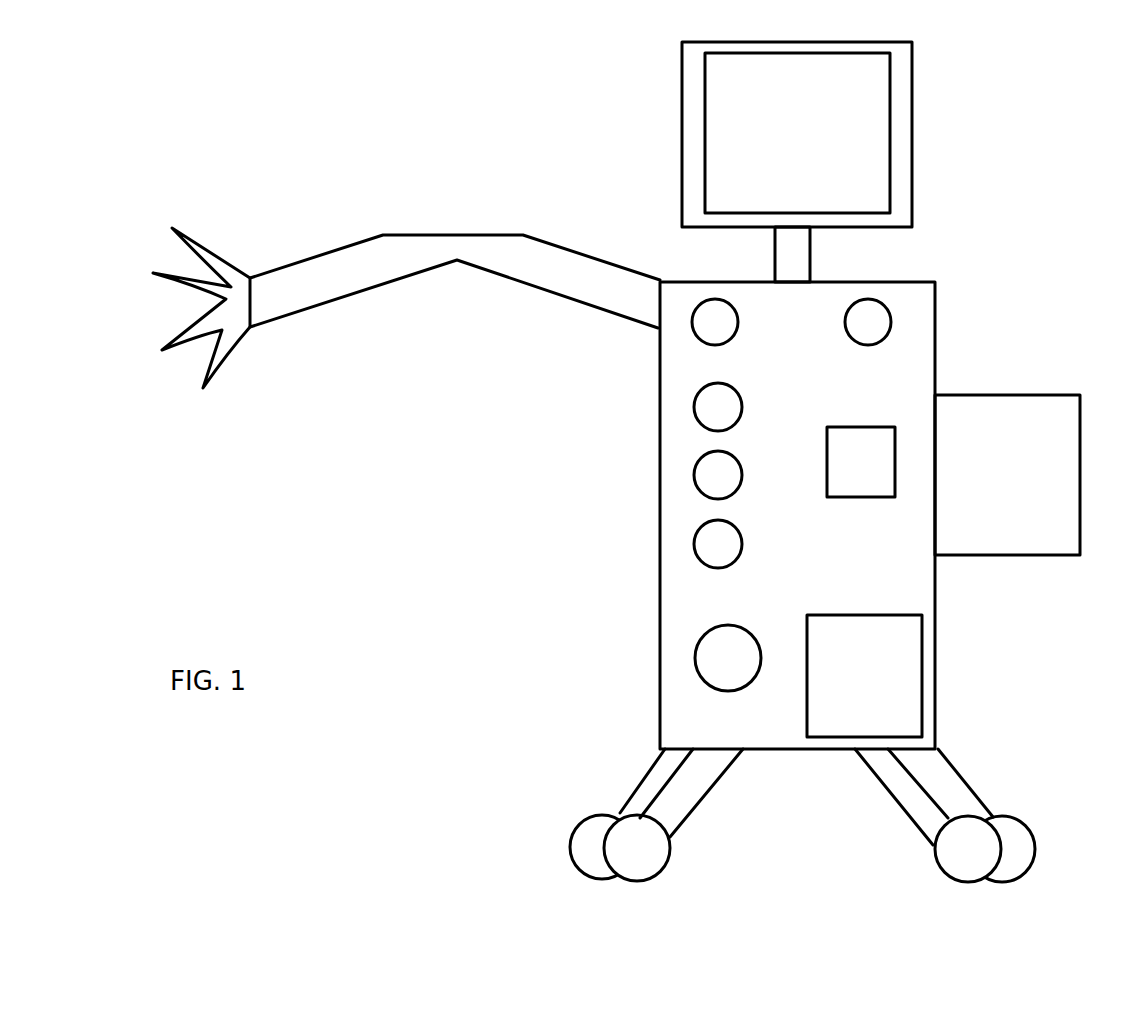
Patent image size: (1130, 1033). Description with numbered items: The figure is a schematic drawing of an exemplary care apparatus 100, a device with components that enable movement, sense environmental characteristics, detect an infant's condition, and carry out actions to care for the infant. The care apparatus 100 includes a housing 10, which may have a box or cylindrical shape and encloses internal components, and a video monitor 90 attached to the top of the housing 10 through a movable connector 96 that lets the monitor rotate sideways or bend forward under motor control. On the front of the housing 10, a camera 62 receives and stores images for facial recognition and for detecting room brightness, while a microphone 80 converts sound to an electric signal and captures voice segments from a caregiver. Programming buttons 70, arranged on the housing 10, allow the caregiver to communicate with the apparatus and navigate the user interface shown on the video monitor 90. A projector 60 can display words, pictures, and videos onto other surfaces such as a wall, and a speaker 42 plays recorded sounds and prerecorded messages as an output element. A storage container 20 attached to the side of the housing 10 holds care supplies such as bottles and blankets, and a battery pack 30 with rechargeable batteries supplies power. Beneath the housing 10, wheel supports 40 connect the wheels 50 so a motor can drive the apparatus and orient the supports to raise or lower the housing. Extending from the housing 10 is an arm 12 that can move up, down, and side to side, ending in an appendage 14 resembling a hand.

The care apparatus 100 is at (338, 166).
The housing 10 is at (913, 343).
The arm 12 is at (525, 265).
The appendage 14 is at (240, 328).
The storage container 20 is at (966, 476).
The battery pack 30 is at (843, 682).
The wheel supports 40 is at (642, 782).
The speaker 42 is at (717, 657).
The wheels 50 is at (600, 848).
The projector 60 is at (841, 472).
The camera 62 is at (717, 323).
The programming buttons 70 is at (630, 477).
The microphone 80 is at (868, 322).
The video monitor 90 is at (705, 150).
The movable connector 96 is at (797, 258).